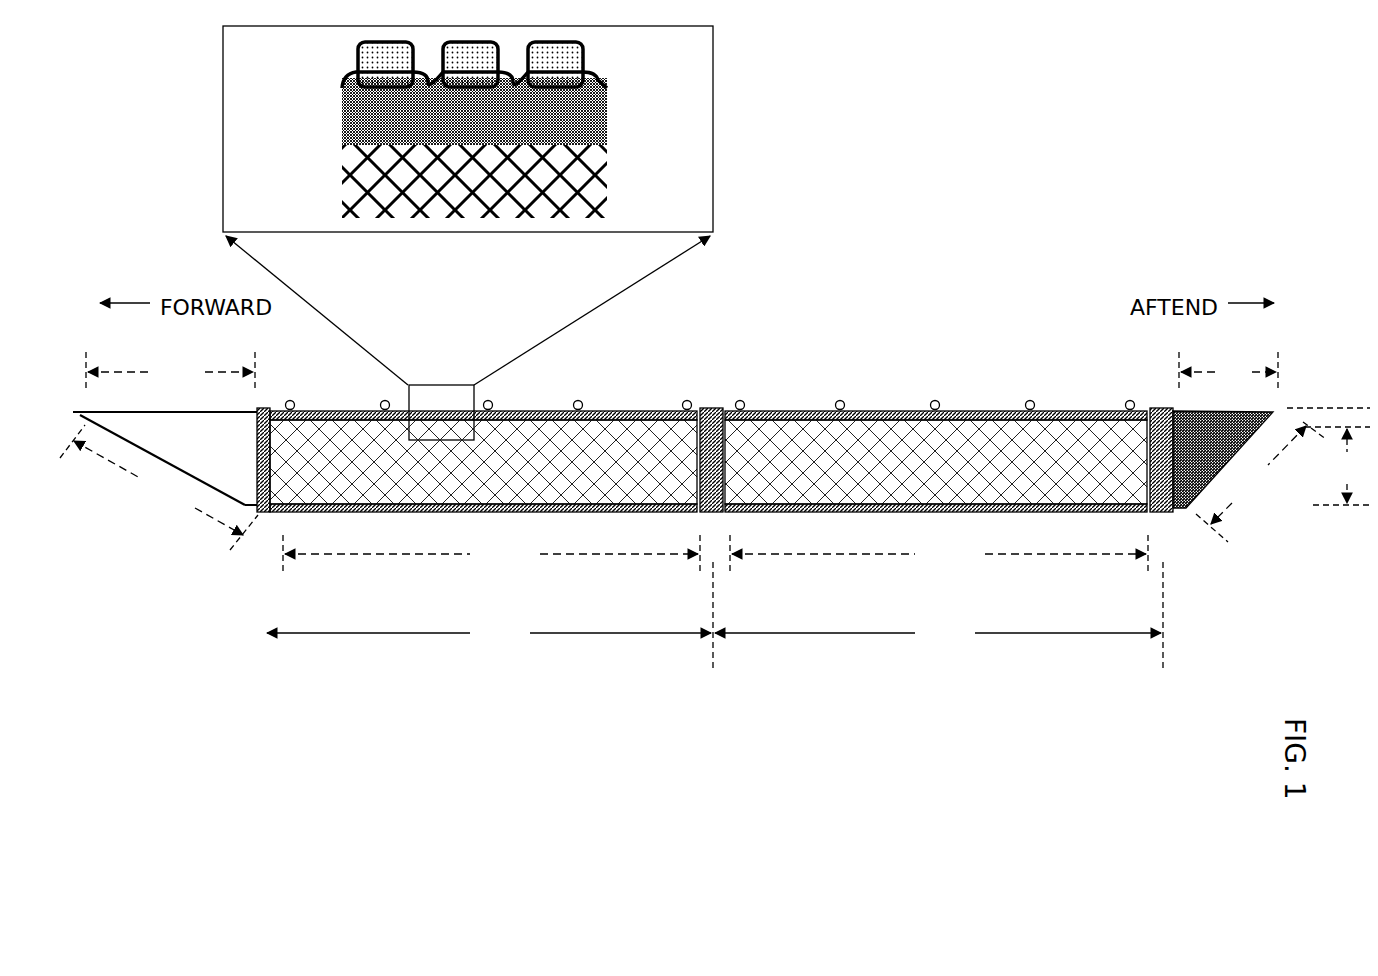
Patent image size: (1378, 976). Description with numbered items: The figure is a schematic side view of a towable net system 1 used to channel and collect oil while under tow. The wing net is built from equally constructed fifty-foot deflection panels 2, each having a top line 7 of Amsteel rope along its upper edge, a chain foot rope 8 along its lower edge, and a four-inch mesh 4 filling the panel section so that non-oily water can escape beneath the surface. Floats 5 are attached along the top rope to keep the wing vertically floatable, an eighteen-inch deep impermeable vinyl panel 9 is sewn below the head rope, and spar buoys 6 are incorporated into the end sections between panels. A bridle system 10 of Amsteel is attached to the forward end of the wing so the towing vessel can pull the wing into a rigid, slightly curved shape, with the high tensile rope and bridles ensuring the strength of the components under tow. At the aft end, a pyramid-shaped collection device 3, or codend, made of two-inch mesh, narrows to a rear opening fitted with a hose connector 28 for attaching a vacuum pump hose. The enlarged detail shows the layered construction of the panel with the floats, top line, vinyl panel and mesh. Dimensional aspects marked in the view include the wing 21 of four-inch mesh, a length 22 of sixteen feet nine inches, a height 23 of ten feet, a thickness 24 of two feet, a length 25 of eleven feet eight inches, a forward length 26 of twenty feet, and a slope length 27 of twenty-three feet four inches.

The towable net system 1 is at (862, 224).
The deflection panel 2 is at (715, 616).
The collection device 3 is at (1278, 670).
The mesh 4 is at (775, 436).
The floats 5 is at (590, 45).
The spar buoy 6 is at (716, 394).
The top line 7 is at (338, 72).
The foot rope 8 is at (958, 500).
The impermeable vinyl panel 9 is at (614, 112).
The bridle system 10 is at (83, 562).
The wing 21 is at (715, 553).
The dimension of sixteen feet nine inches 22 is at (1261, 482).
The dimension of ten feet 23 is at (1341, 467).
The dimension of two feet 24 is at (1338, 419).
The dimension of eleven feet eight inches 25 is at (1228, 372).
The dimension of twenty feet 26 is at (170, 372).
The dimension of twenty-three feet four inches 27 is at (159, 487).
The hose connector 28 is at (445, 233).